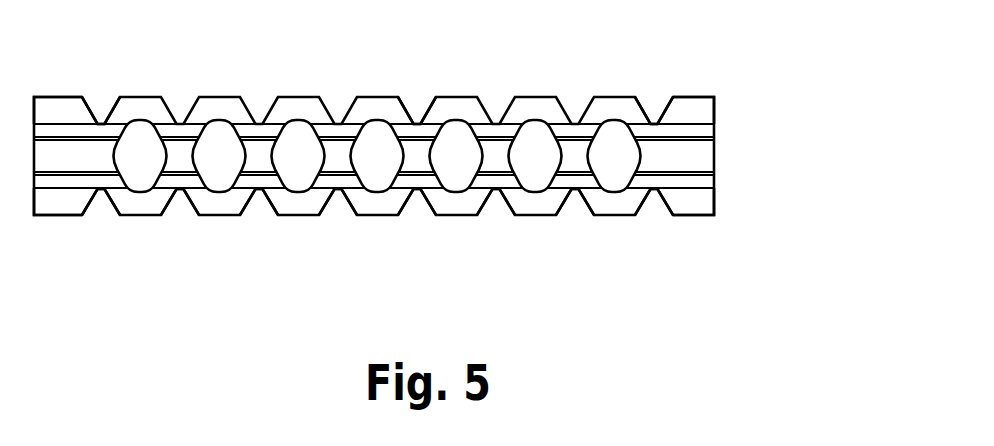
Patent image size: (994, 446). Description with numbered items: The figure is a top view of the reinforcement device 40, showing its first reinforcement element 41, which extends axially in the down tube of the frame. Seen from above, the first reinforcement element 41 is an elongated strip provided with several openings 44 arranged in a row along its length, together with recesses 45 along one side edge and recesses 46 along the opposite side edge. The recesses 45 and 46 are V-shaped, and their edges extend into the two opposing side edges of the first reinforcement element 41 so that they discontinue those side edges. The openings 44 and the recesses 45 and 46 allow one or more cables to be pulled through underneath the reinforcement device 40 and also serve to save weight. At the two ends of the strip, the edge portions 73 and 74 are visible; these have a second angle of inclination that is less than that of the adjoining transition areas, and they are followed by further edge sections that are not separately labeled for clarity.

The reinforcement device 40 is at (762, 72).
The first reinforcement element 41 is at (693, 150).
The openings 44 is at (219, 153).
The recesses 45 is at (99, 100).
The recesses 46 is at (102, 217).
The edge portion 73 is at (53, 203).
The edge portion 74 is at (47, 107).